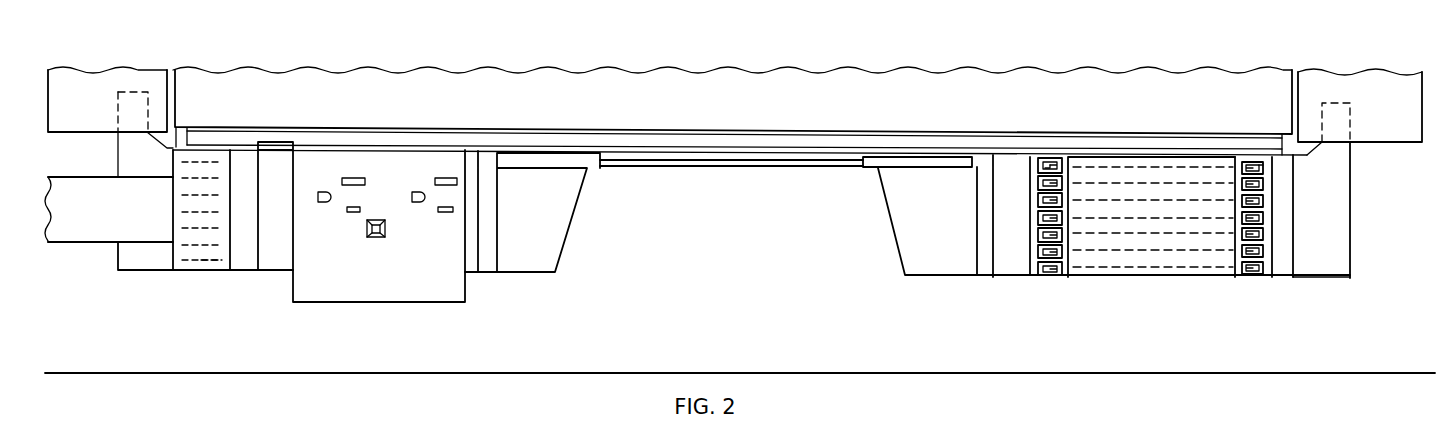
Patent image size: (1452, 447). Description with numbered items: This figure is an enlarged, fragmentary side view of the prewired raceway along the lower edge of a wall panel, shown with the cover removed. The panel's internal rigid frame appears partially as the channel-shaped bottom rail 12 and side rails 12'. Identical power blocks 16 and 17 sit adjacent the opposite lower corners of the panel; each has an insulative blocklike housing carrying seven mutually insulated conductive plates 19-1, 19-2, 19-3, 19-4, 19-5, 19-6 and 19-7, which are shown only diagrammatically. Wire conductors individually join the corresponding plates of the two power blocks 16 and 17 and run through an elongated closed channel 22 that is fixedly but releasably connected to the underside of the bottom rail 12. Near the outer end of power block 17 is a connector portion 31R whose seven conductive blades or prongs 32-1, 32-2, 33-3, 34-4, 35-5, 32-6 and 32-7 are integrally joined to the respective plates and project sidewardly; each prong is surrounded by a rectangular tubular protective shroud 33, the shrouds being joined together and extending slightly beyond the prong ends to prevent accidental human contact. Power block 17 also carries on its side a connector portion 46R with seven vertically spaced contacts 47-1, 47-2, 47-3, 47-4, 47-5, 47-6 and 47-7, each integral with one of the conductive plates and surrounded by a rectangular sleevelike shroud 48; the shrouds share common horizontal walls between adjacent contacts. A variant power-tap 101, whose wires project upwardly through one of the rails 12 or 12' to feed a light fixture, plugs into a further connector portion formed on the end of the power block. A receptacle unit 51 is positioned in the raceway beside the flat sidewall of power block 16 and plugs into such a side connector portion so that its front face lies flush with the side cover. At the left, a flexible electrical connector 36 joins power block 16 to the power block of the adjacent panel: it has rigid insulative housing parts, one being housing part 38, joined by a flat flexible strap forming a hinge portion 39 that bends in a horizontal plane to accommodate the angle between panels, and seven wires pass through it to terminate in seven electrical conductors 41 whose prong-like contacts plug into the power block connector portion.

The bottom rail 12 is at (677, 89).
The side rail 12' is at (1360, 93).
The flexible hinge portion 39 is at (82, 187).
The flexible electrical connector 36 is at (85, 246).
The housing part 38 is at (185, 267).
The electrical conductors 41 is at (202, 265).
The receptacle unit 51 is at (398, 305).
The power block 16 is at (505, 276).
The elongated closed channel 22 is at (779, 158).
The power block 17 is at (1008, 288).
The connector portion 46R is at (1028, 205).
The conductive contact 47-1 is at (1045, 163).
The conductive contact 47-2 is at (1040, 180).
The conductive contact 47-3 is at (1040, 196).
The conductive contact 47-4 is at (1040, 219).
The conductive contact 47-5 is at (1040, 236).
The conductive contact 47-6 is at (1040, 255).
The conductive contact 47-7 is at (1050, 272).
The sleevelike shroud 48 is at (1051, 166).
The conductive plate 19-1 is at (1105, 167).
The conductive plate 19-2 is at (1157, 187).
The conductive plate 19-3 is at (1190, 195).
The conductive plate 19-4 is at (1103, 218).
The conductive plate 19-5 is at (1140, 235).
The conductive plate 19-6 is at (1178, 250).
The conductive plate 19-7 is at (1203, 267).
The protective shroud 33 is at (1235, 164).
The conductive prong 32-1 is at (1259, 165).
The conductive prong 32-2 is at (1263, 183).
The contact 33-3 is at (1263, 199).
The contact 34-4 is at (1263, 214).
The contact 35-5 is at (1270, 238).
The conductive prong 32-6 is at (1240, 257).
The conductive prong 32-7 is at (1263, 280).
The power-tap 101 is at (1342, 248).
The connector portion 31R is at (1277, 245).